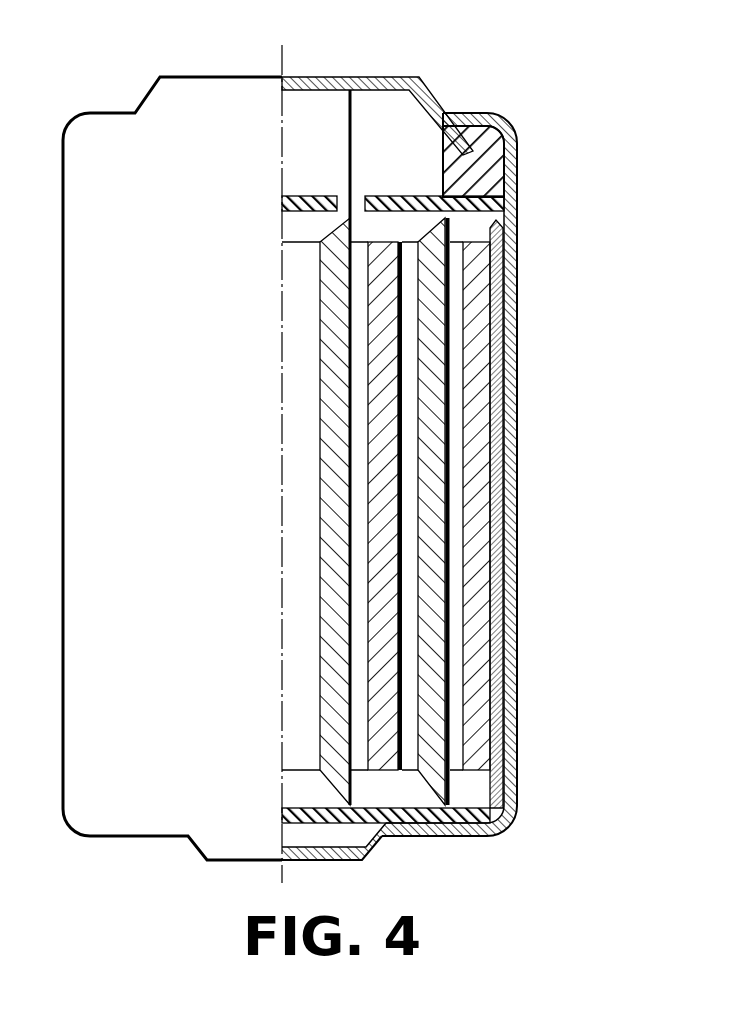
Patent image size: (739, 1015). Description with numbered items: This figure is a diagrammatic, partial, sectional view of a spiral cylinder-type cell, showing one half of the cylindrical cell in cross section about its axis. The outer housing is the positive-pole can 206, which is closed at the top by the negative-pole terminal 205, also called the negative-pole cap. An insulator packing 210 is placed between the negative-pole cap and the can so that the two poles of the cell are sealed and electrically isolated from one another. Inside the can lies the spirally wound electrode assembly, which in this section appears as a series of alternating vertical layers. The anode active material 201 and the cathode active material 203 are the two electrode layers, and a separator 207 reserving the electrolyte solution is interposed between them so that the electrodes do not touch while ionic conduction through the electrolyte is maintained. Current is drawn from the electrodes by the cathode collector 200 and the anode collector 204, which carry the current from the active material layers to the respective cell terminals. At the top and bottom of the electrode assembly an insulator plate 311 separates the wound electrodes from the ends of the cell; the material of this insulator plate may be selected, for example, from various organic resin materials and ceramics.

The cathode collector 200 is at (352, 153).
The anode active material 201 is at (437, 416).
The cathode active material 203 is at (477, 693).
The anode collector 204 is at (507, 590).
The negative-pole terminal 205 is at (374, 77).
The positive-pole can 206 is at (370, 848).
The separator 207 is at (412, 327).
The insulator packing 210 is at (518, 173).
The insulator plate 311 is at (518, 206).